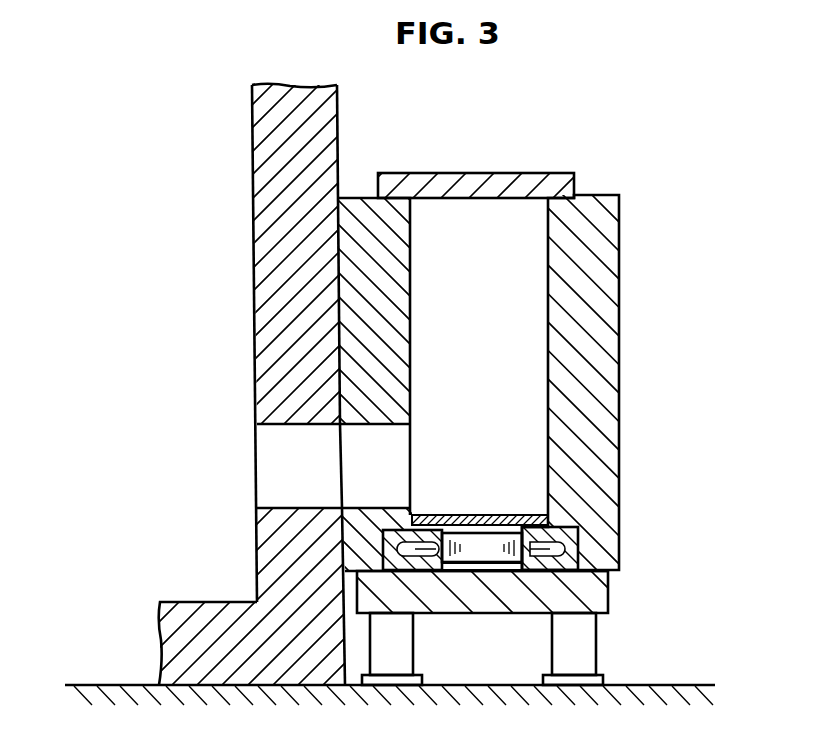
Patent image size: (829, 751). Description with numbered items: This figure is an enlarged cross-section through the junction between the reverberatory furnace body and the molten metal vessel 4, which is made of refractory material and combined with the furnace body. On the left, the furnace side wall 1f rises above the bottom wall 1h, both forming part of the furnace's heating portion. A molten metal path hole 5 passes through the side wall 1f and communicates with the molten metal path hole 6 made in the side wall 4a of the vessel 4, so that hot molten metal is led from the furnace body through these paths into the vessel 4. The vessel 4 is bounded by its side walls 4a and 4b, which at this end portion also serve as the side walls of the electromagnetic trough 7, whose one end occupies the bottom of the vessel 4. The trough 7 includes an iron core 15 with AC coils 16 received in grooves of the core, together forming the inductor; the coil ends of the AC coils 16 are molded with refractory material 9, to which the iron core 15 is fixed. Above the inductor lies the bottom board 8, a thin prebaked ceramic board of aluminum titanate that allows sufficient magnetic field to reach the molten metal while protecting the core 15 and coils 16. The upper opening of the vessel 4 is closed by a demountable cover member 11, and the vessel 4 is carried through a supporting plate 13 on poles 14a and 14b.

The side wall 1f is at (298, 283).
The bottom wall 1h is at (241, 655).
The molten metal vessel 4 is at (622, 312).
The side wall of the molten metal vessel 4a is at (363, 522).
The side wall of the molten metal vessel 4b is at (590, 415).
The molten metal path hole 5 is at (302, 508).
The molten metal path hole 6 is at (383, 507).
The electromagnetic trough 7 is at (483, 580).
The bottom board 8 is at (474, 522).
The refractory material 9 is at (580, 555).
The cover member 11 is at (480, 185).
The supporting plate 13 is at (590, 595).
The pole 14a is at (390, 662).
The pole 14b is at (576, 660).
The iron core 15 is at (492, 545).
The AC coils 16 is at (422, 573).